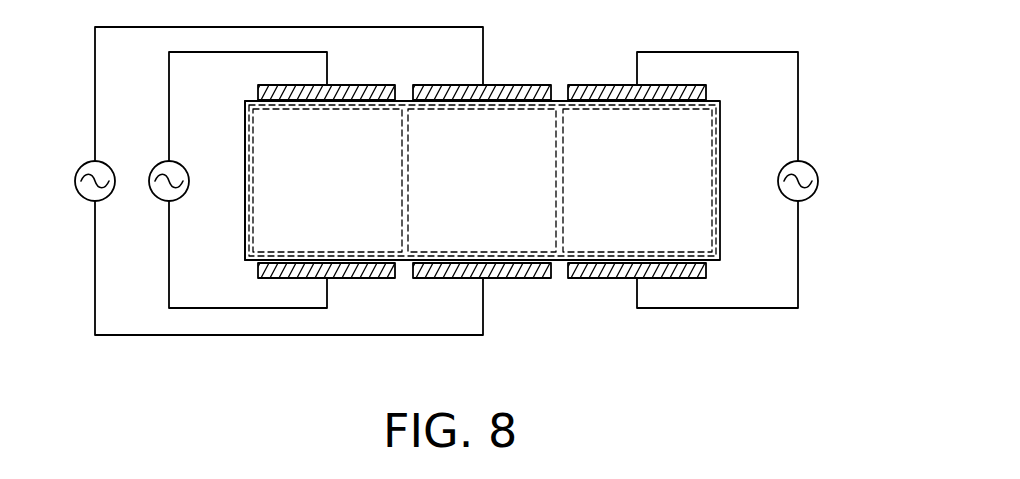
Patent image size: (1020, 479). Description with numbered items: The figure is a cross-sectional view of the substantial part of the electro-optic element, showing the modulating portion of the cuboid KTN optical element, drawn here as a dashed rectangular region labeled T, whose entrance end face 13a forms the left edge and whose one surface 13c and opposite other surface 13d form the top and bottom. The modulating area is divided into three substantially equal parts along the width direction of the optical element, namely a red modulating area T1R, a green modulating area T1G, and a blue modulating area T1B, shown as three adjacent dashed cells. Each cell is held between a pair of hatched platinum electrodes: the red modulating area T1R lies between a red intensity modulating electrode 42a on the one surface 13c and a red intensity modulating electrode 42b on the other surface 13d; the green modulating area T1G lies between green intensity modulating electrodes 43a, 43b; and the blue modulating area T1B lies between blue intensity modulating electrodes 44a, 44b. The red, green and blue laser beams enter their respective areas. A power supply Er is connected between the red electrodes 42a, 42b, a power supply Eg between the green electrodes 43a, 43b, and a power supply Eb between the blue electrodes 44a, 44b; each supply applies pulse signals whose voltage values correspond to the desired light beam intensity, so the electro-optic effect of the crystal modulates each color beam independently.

The touch panel T is at (245, 106).
The red modulating area T1R is at (248, 143).
The green modulating area T1G is at (521, 279).
The blue modulating area T1B is at (686, 279).
The entrance end face 13a is at (245, 228).
The one surface 13c is at (557, 100).
The other surface 13d is at (557, 263).
The red intensity modulating electrode 42a is at (353, 84).
The red intensity modulating electrode 42b is at (362, 280).
The green intensity modulating electrode 43a is at (503, 84).
The green intensity modulating electrode 43b is at (455, 280).
The blue intensity modulating electrode 44a is at (676, 84).
The blue intensity modulating electrode 44b is at (612, 280).
The power supply Eg is at (77, 194).
The power supply Eb is at (151, 194).
The power supply Er is at (816, 190).